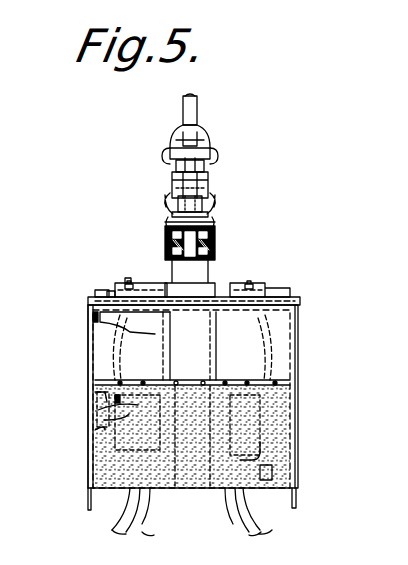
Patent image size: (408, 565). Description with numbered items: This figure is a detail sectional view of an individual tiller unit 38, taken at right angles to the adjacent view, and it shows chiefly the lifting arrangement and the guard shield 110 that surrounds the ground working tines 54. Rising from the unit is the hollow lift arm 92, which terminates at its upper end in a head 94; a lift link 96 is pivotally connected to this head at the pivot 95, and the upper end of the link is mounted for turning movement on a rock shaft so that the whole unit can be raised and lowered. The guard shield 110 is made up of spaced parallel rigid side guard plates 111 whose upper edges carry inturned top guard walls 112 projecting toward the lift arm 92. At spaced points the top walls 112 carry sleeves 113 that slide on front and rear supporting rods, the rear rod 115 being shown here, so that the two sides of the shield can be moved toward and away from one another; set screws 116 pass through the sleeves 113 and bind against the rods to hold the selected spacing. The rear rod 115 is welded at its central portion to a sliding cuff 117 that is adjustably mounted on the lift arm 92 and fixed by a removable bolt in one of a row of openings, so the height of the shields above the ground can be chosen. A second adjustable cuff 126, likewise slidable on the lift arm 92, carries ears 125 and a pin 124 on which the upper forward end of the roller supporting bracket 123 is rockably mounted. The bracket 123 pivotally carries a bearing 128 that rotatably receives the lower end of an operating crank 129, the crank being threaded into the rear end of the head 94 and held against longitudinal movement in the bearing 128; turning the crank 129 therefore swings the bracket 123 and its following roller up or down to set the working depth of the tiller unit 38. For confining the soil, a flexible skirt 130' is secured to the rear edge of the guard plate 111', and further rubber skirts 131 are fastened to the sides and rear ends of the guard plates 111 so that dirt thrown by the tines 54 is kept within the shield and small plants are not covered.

The tiller unit 38 is at (219, 231).
The ground working teeth or tines 54 is at (138, 519).
The lift arm 92 is at (218, 281).
The head 94 is at (207, 186).
The pivot connection 95 is at (208, 151).
The lift link 96 is at (196, 107).
The guard shield 110 is at (311, 352).
The side guard plates 111 is at (190, 495).
The guard plate 111' is at (130, 345).
The inturned top guard walls 112 is at (110, 347).
The front and rear sleeves 113 is at (127, 292).
The rear supporting rod 115 is at (279, 292).
The set screws 116 is at (137, 286).
The sliding cuff 117 is at (166, 295).
The supporting bracket 123 is at (202, 272).
The pin 124 is at (168, 230).
The ears 125 is at (170, 218).
The second adjustable cuff 126 is at (170, 207).
The bearing 128 is at (213, 244).
The operating crank 129 is at (202, 171).
The flexible skirt 130' is at (224, 433).
The flexible skirts 131 is at (110, 430).